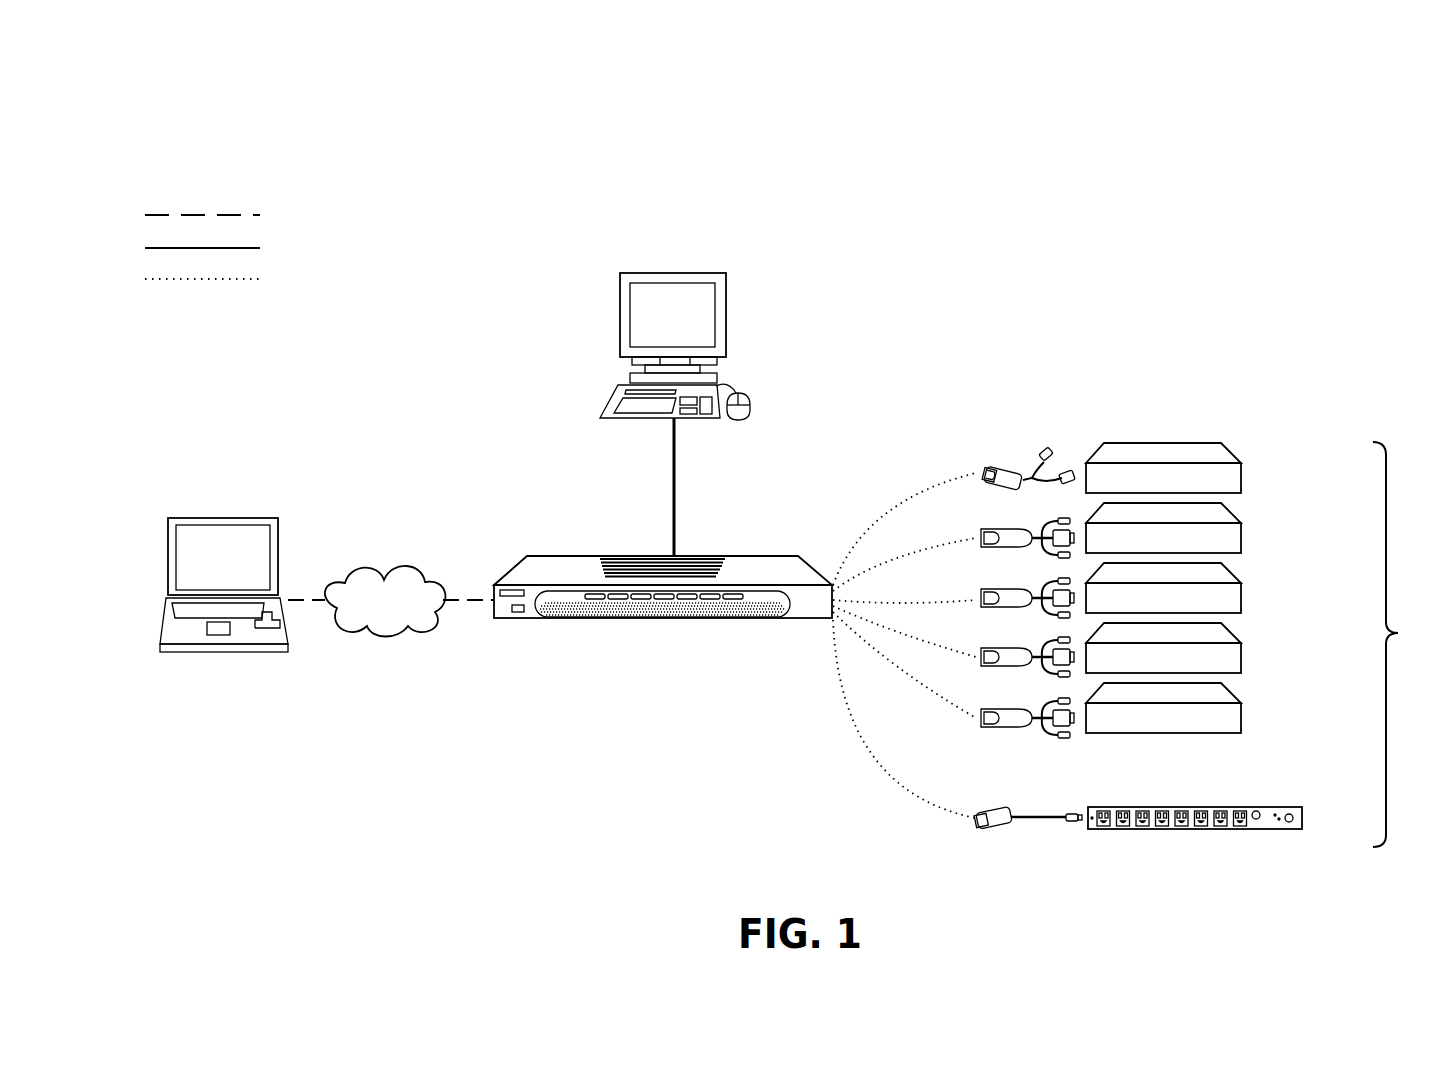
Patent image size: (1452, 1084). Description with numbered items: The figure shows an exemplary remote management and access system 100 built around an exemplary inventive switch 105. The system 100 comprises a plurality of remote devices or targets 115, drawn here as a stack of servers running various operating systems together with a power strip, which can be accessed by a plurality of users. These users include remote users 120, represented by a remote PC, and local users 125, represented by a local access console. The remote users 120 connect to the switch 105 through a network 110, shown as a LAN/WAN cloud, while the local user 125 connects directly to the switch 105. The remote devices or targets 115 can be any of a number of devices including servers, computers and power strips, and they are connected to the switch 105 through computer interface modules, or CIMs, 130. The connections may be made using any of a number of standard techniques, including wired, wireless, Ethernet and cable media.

The remote management and access system 100 is at (789, 529).
The switch 105 is at (663, 614).
The network 110 is at (385, 617).
The remote devices or targets 115 is at (1260, 644).
The remote users 120 is at (224, 612).
The local users 125 is at (692, 381).
The computer interface modules (CIMs) 130 is at (1028, 600).